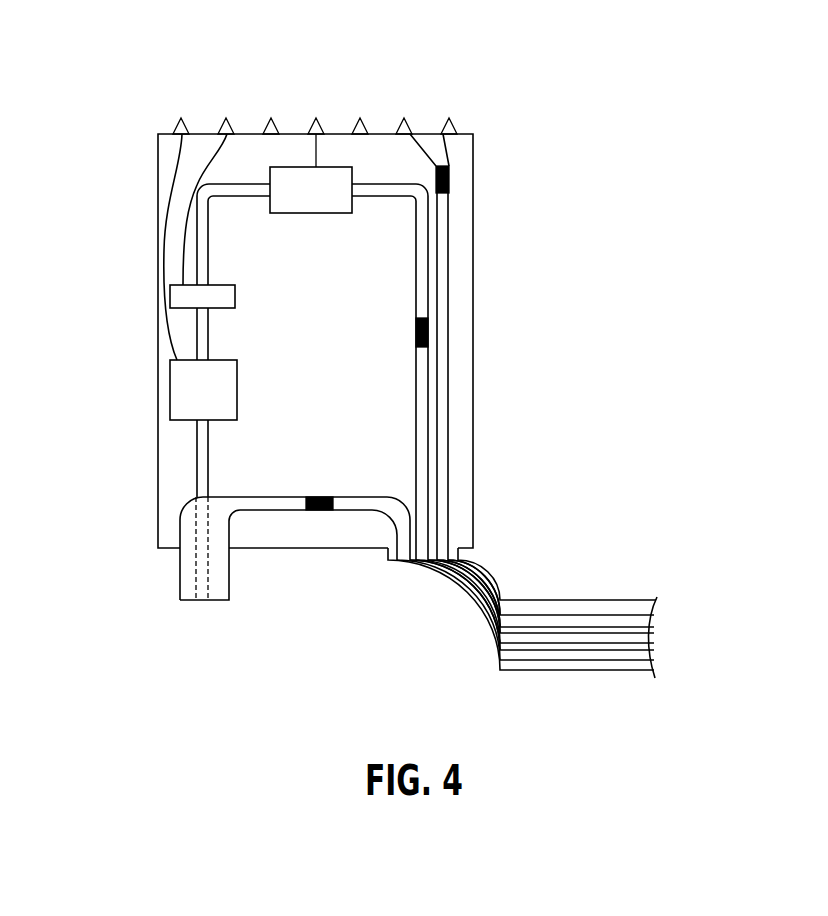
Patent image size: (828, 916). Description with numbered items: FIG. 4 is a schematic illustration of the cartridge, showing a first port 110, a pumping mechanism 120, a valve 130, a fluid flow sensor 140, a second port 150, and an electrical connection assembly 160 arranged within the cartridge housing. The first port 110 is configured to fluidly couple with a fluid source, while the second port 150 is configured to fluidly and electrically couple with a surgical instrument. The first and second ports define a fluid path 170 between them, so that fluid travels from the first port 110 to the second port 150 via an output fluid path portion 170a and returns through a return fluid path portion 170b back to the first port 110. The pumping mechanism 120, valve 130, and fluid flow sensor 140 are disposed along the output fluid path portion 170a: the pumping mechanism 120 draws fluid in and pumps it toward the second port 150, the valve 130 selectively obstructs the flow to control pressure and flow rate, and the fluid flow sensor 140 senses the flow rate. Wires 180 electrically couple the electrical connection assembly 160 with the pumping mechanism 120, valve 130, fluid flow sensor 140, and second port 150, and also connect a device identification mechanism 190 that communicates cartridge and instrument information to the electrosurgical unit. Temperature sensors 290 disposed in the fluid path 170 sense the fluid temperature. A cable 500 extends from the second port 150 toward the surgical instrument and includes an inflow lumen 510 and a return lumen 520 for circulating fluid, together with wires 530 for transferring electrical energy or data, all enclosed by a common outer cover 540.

The first port 110 is at (187, 575).
The pumping mechanism 120 is at (170, 398).
The valve 130 is at (170, 295).
The fluid flow sensor 140 is at (320, 214).
The second port 150 is at (460, 553).
The electrical connection assembly 160 is at (453, 83).
The fluid path 170 is at (197, 473).
The output fluid path portion 170a is at (205, 230).
The return fluid path portion 170b is at (265, 511).
The wires 180 is at (317, 152).
The device identification mechanism 190 is at (449, 177).
The temperature sensor 290 is at (428, 332).
The cable 500 is at (633, 671).
The inflow lumen 510 is at (563, 635).
The return lumen 520 is at (500, 656).
The wire 530 is at (448, 587).
The outer cover 540 is at (620, 600).